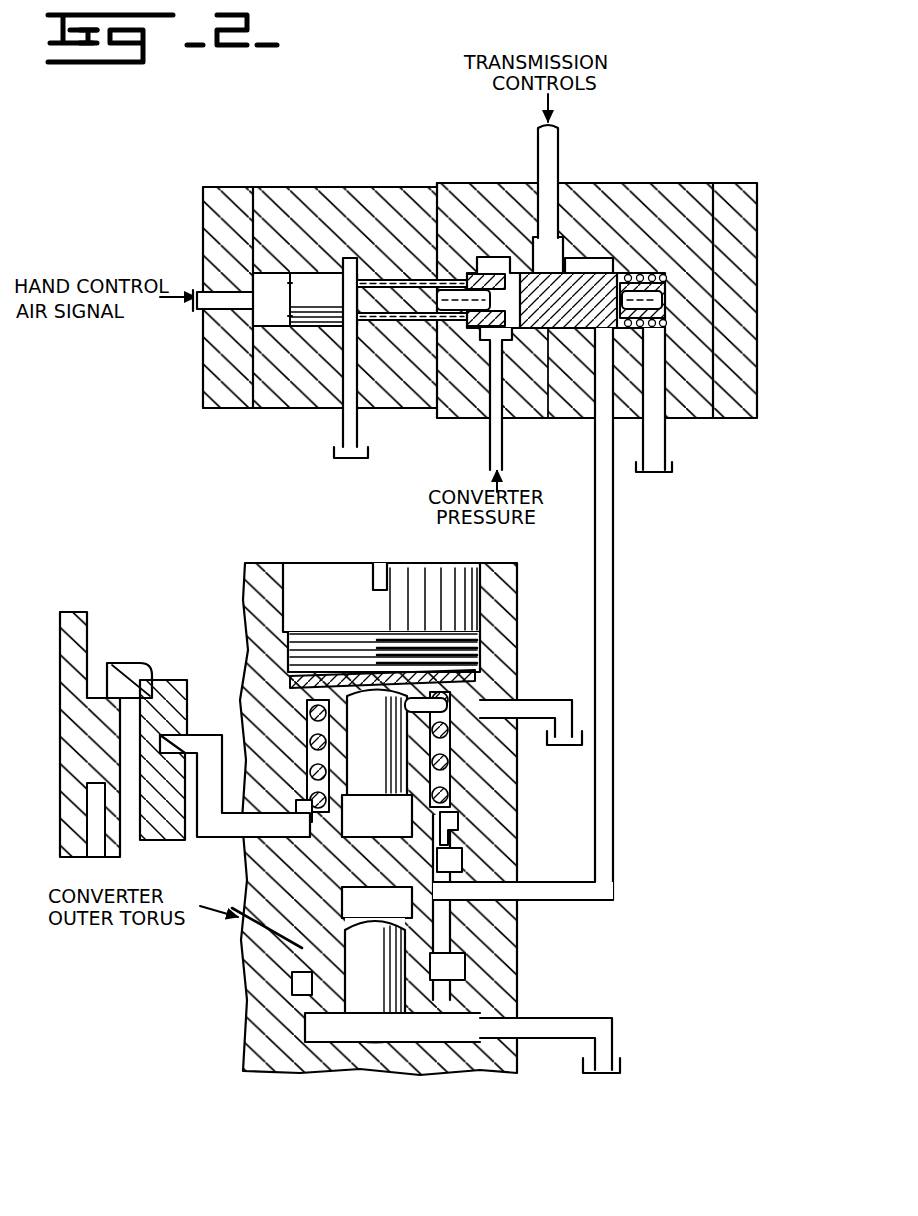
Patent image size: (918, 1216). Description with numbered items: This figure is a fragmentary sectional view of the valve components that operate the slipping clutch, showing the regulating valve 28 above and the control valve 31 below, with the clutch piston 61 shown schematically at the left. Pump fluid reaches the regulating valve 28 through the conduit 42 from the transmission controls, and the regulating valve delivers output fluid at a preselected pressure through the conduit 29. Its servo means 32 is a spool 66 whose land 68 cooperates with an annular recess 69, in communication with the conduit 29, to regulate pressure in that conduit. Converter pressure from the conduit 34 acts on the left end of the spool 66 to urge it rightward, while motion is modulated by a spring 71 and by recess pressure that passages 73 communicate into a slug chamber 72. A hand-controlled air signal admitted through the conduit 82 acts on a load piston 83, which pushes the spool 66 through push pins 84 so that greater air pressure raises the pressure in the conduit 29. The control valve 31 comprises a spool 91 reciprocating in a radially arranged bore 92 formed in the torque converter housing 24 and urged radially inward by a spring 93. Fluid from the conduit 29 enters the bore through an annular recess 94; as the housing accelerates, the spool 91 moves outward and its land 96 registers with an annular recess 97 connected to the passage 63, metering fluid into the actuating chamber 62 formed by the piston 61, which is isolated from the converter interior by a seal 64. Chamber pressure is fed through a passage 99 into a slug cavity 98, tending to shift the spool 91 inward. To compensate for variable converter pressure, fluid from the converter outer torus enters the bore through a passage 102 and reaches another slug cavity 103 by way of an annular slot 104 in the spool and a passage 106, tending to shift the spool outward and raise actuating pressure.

The torque converter housing 24 is at (517, 588).
The regulating valve 28 is at (694, 172).
The conduit 29 is at (613, 580).
The control valve 31 is at (528, 654).
The servo means 32 is at (466, 266).
The conduit 34 is at (490, 442).
The conduit 42 is at (571, 143).
The piston 61 is at (95, 698).
The actuating chamber 62 is at (152, 708).
The passage 63 is at (216, 840).
The seal 64 is at (122, 822).
The spool 66 is at (531, 268).
The land 68 is at (568, 300).
The annular recess 69 is at (605, 228).
The spring 71 is at (668, 292).
The slug chamber 72 is at (615, 283).
The passages 73 is at (612, 336).
The conduit 82 is at (197, 306).
The load piston 83 is at (340, 307).
The push pins 84 is at (402, 304).
The spool 91 is at (388, 876).
The bore 92 is at (455, 743).
The spring 93 is at (308, 738).
The annular recess 94 is at (453, 906).
The land 96 is at (452, 848).
The annular recess 97 is at (458, 814).
The slug cavity 98 is at (392, 833).
The passage 99 is at (300, 812).
The passage 102 is at (242, 926).
The slug cavity 103 is at (404, 917).
The annular slot 104 is at (305, 984).
The passage 106 is at (375, 980).